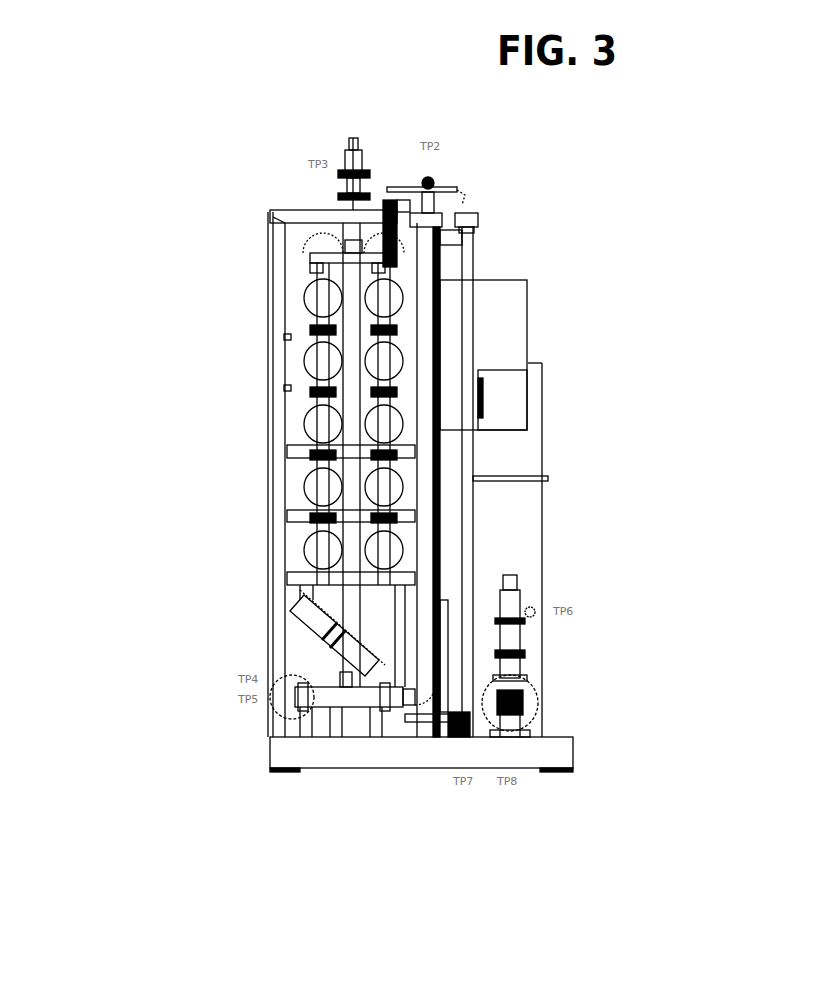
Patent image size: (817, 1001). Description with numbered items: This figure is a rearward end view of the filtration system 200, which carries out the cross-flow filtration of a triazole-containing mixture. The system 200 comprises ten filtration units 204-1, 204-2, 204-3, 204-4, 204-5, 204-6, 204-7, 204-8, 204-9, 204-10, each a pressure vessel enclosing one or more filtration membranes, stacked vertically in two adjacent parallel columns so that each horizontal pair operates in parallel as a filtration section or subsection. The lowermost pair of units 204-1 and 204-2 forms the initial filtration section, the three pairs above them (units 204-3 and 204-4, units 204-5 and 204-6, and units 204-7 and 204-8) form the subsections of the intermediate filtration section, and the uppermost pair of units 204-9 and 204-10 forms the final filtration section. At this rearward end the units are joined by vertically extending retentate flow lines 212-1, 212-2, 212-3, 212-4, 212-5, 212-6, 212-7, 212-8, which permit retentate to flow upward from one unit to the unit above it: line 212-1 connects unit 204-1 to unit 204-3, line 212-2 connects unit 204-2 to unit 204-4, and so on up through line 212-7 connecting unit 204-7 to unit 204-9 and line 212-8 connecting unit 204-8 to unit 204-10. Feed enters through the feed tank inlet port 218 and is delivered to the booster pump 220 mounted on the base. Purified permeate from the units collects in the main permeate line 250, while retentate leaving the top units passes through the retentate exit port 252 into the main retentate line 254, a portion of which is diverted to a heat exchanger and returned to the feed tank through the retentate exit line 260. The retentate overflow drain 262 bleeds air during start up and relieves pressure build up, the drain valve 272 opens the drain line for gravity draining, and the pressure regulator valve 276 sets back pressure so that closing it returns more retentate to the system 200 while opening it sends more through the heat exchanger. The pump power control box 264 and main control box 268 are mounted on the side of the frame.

The filtration system 200 is at (188, 269).
The filtration unit 204-1 is at (320, 548).
The filtration unit 204-2 is at (386, 550).
The filtration unit 204-3 is at (316, 485).
The filtration unit 204-4 is at (386, 488).
The filtration unit 204-5 is at (316, 422).
The filtration unit 204-6 is at (386, 425).
The filtration unit 204-7 is at (320, 360).
The filtration unit 204-8 is at (386, 362).
The filtration unit 204-9 is at (320, 292).
The filtration unit 204-10 is at (386, 300).
The vertical retentate flow line 212-1 is at (320, 516).
The vertical retentate flow line 212-2 is at (388, 519).
The vertical retentate flow line 212-3 is at (320, 456).
The vertical retentate flow line 212-4 is at (388, 456).
The vertical retentate flow line 212-5 is at (320, 393).
The vertical retentate flow line 212-6 is at (388, 393).
The vertical retentate flow line 212-7 is at (320, 333).
The vertical retentate flow line 212-8 is at (388, 332).
The feed tank inlet port 218 is at (502, 730).
The booster pump 220 is at (530, 705).
The main permeate line 250 is at (356, 150).
The retentate exit port 252 is at (327, 232).
The main retentate line 254 is at (330, 695).
The retentate exit line 260 is at (443, 217).
The retentate overflow drain 262 is at (452, 188).
The pump power control box 264 is at (528, 408).
The main control box 268 is at (508, 315).
The drain valve 272 is at (458, 732).
The pressure regulator valve 276 is at (300, 622).